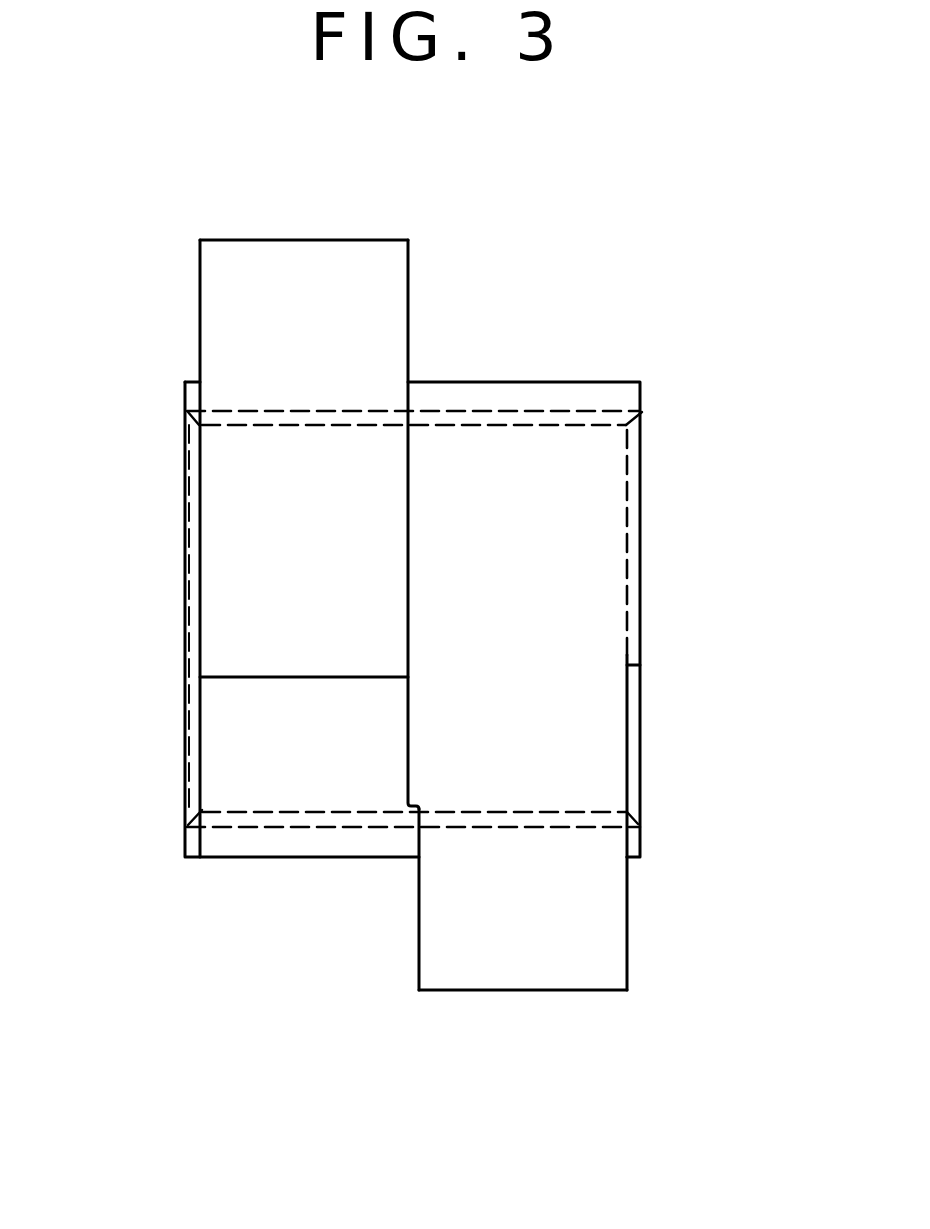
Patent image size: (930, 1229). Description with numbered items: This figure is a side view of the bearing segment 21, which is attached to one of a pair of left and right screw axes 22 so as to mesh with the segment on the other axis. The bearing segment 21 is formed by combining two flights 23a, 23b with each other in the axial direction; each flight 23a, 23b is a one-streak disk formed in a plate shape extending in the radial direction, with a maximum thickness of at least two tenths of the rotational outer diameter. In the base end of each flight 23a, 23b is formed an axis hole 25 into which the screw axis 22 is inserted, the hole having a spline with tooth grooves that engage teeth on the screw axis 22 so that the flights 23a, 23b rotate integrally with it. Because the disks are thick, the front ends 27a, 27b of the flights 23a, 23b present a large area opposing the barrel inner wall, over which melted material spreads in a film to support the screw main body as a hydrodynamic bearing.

The bearing segment 21 is at (667, 643).
The screw axis 22 is at (500, 408).
The flight 23a is at (232, 317).
The flight 23b is at (598, 928).
The axis hole 25 is at (567, 427).
The front end 27a is at (305, 240).
The front end 27b is at (535, 990).